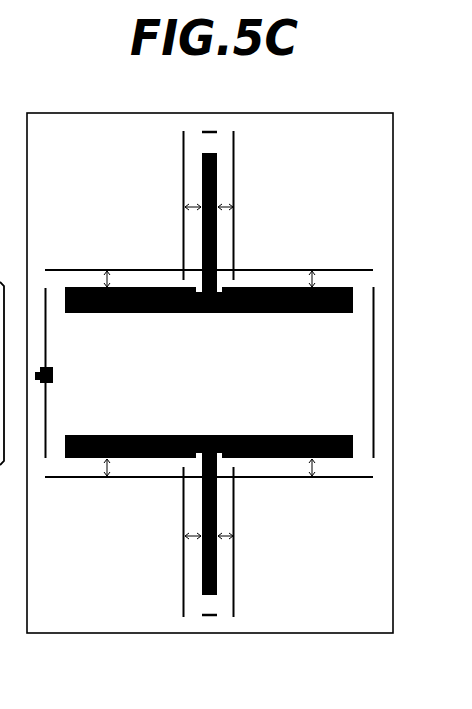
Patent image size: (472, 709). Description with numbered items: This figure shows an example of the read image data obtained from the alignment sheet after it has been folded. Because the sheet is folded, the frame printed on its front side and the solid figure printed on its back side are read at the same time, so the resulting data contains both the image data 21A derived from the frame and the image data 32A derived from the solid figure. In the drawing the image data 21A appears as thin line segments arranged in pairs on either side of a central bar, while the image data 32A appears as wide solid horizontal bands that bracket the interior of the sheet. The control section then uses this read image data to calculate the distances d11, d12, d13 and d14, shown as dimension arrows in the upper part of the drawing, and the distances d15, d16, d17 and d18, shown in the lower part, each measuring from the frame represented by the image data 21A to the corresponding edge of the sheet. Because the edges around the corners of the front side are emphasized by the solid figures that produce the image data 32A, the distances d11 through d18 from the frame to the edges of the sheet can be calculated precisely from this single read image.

The image data derived from the frame 21A is at (183, 137).
The image data derived from the solid figure 32A is at (315, 313).
The distance d11 is at (312, 278).
The distance d12 is at (230, 203).
The distance d13 is at (107, 277).
The distance d14 is at (188, 204).
The distance d15 is at (310, 468).
The distance d16 is at (228, 543).
The distance d17 is at (98, 476).
The distance d18 is at (197, 542).